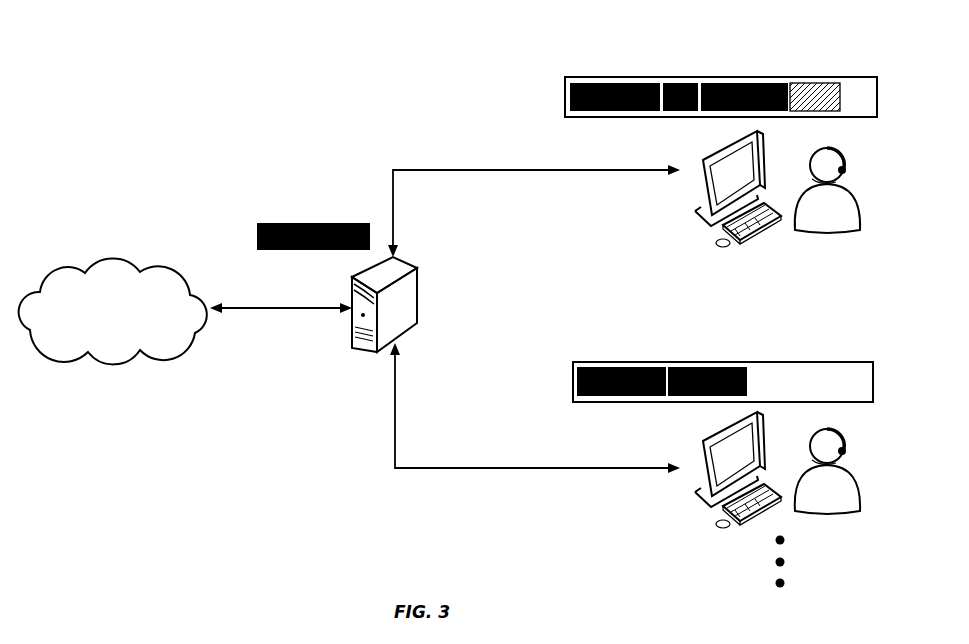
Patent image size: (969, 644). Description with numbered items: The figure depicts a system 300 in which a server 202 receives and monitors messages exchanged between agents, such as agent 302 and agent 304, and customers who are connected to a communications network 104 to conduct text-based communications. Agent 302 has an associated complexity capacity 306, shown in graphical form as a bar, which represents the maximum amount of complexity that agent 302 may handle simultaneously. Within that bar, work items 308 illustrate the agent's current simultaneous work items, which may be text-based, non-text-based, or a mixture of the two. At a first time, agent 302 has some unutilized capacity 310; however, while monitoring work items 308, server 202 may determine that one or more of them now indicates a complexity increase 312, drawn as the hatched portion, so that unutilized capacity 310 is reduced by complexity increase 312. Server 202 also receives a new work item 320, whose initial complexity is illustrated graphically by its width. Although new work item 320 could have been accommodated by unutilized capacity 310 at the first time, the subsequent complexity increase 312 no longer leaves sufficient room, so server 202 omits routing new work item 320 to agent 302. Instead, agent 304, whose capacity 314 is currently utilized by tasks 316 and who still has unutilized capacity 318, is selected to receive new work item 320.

The system 300 is at (67, 40).
The communications network 104 is at (71, 262).
The new work item 320 is at (310, 223).
The server 202 is at (384, 304).
The agent 302 is at (812, 244).
The agent 304 is at (831, 544).
The complexity capacity 306 is at (707, 75).
The work items 308 is at (790, 70).
The unutilized capacity 310 is at (844, 75).
The complexity increase 312 is at (840, 95).
The capacity 314 is at (700, 348).
The tasks 316 is at (578, 350).
The unutilized capacity 318 is at (740, 350).